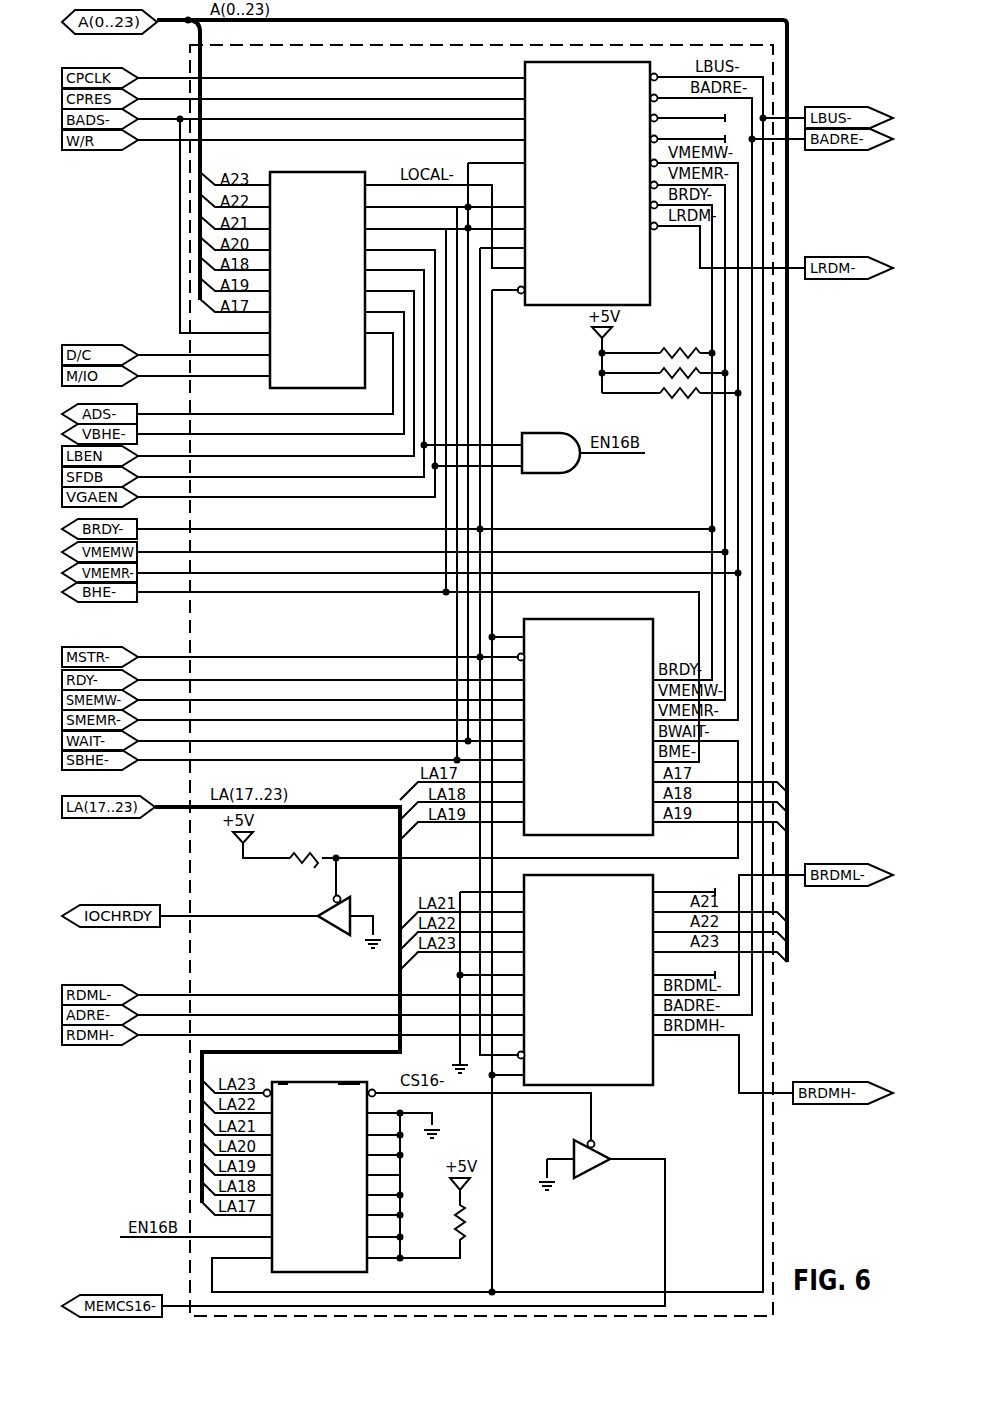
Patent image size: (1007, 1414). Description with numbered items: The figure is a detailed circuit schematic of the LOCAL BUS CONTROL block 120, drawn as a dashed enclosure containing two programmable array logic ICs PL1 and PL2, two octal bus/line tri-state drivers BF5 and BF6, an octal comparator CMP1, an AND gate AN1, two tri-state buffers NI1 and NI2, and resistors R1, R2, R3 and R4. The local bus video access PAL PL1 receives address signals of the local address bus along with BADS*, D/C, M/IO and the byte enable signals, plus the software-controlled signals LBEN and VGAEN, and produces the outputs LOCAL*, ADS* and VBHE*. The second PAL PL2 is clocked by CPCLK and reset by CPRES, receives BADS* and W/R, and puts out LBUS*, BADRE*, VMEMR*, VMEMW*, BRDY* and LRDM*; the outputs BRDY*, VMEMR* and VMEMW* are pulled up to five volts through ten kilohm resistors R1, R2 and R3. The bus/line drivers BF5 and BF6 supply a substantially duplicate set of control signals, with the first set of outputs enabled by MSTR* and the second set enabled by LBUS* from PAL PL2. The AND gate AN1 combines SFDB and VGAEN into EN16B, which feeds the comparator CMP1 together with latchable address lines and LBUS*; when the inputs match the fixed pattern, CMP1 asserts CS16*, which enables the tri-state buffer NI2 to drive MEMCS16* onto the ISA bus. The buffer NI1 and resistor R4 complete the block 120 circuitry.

The LOCAL BUS CONTROL block 120 is at (403, 44).
The local bus video access PAL PL1 is at (317, 270).
The second PAL PL2 is at (600, 174).
The octal bus/line tri-state driver BF5 is at (586, 730).
The second bus/line driver BF6 is at (602, 983).
The octal comparator CMP1 is at (320, 1176).
The AND gate AN1 is at (551, 454).
The tri-state buffer NI1 is at (309, 927).
The tri-state buffer NI2 is at (613, 1172).
The pull-up resistor R1 is at (680, 344).
The pull-up resistor R2 is at (666, 368).
The pull-up resistor R3 is at (680, 402).
The resistor R4 is at (287, 847).